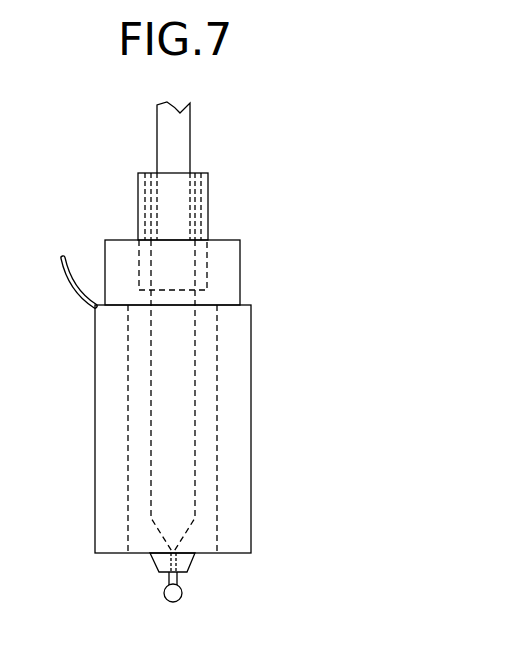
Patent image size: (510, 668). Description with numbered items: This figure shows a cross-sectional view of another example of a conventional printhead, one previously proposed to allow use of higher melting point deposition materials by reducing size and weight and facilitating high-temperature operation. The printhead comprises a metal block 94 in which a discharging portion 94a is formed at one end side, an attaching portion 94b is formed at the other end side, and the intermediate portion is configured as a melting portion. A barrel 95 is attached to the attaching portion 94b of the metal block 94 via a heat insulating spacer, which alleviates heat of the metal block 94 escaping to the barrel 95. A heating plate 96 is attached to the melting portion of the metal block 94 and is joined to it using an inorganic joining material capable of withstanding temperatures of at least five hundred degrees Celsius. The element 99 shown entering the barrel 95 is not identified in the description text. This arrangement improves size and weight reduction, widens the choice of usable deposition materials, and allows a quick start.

The cable 99 is at (178, 128).
The barrel 95 is at (202, 213).
The attaching portion 94b is at (227, 275).
The metal block 94 is at (210, 397).
The heating plate 96 is at (237, 450).
The discharging portion 94a is at (180, 573).